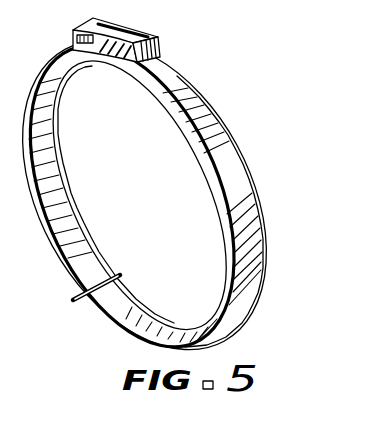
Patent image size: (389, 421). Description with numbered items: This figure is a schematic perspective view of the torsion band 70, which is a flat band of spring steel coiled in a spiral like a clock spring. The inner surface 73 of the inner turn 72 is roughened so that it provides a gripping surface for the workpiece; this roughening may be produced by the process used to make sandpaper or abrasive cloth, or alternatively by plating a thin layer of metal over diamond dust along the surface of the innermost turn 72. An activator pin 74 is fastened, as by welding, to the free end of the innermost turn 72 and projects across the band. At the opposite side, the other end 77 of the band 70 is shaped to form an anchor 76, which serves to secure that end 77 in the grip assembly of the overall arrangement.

The torsion band 70 is at (158, 196).
The inner turn 72 is at (135, 300).
The inner surface 73 is at (126, 316).
The activator pin 74 is at (77, 294).
The anchor 76 is at (155, 40).
The other end 77 is at (200, 74).